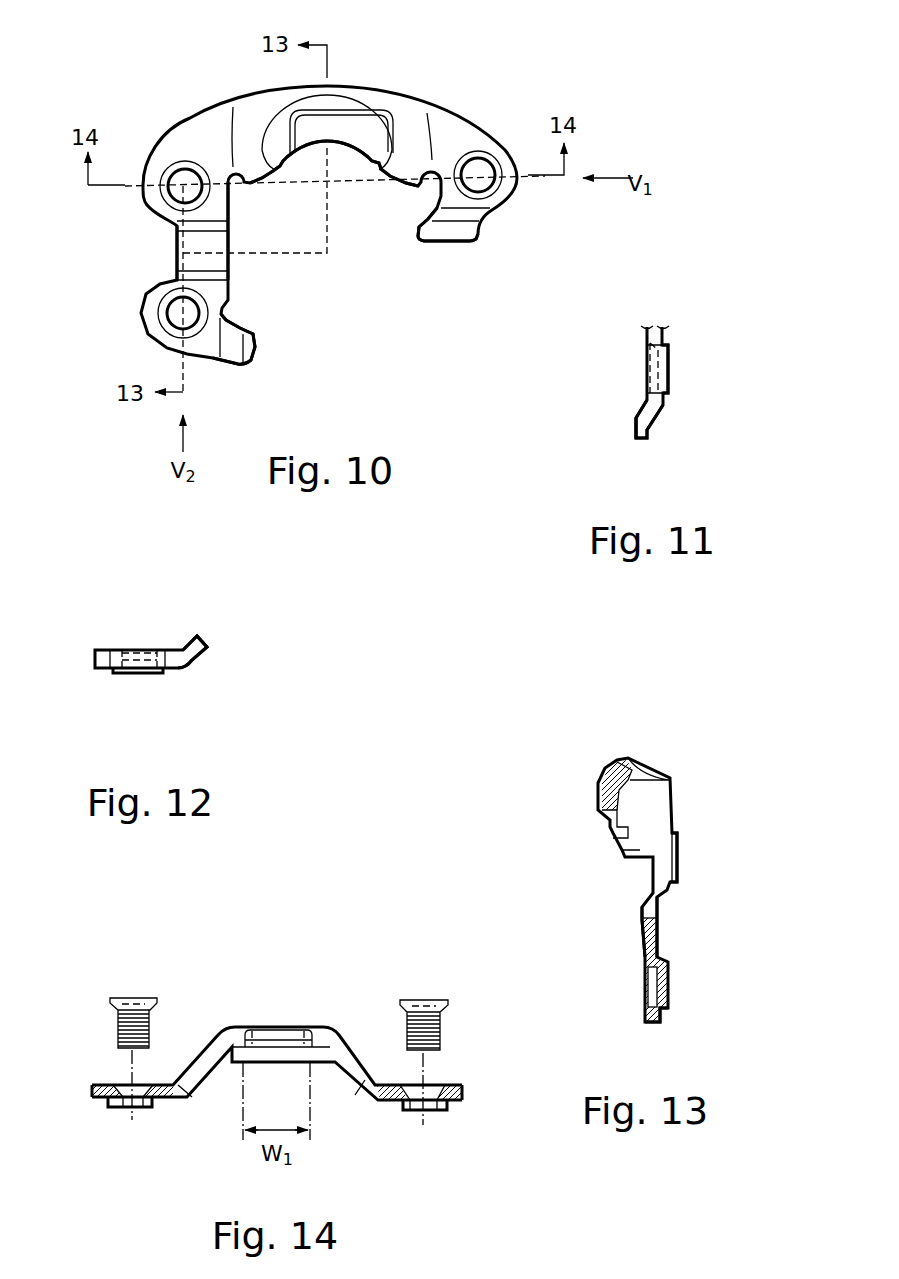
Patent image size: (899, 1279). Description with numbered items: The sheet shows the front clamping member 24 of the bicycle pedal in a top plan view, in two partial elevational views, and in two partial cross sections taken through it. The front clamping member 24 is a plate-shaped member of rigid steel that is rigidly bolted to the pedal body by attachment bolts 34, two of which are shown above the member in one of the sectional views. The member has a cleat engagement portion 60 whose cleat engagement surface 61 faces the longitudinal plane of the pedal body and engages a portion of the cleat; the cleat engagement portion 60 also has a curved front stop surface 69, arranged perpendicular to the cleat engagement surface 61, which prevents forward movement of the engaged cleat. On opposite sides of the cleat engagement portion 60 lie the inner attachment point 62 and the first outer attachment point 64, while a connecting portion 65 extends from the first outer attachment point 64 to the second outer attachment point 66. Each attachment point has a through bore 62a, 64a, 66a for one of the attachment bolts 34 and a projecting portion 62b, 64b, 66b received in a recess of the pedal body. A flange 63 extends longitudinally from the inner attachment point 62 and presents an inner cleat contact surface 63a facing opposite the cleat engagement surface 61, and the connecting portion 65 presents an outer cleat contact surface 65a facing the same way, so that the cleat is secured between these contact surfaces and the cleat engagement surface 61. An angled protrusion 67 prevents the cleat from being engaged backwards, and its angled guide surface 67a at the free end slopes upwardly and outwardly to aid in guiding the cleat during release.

In FIG. 10, the front clamping member 24 is at (412, 98).
In FIG. 11, the front clamping member 24 is at (697, 322).
In FIG. 12, the front clamping member 24 is at (122, 572).
In FIG. 13, the front clamping member 24 is at (700, 793).
In FIG. 14, the front clamping member 24 is at (327, 1023).
In FIG. 14, the attachment bolt 34 is at (149, 992).
In FIG. 10, the cleat engagement portion 60 is at (353, 90).
In FIG. 13, the cleat engagement portion 60 is at (603, 767).
In FIG. 14, the cleat engagement portion 60 is at (270, 1024).
In FIG. 13, the cleat engagement surface 61 is at (618, 800).
In FIG. 14, the cleat engagement surface 61 is at (266, 1048).
In FIG. 10, the inner attachment point 62 is at (492, 150).
In FIG. 11, the inner attachment point 62 is at (645, 373).
In FIG. 14, the inner attachment point 62 is at (445, 1082).
In FIG. 10, the through bore 62a is at (492, 188).
In FIG. 11, the through bore 62a is at (660, 387).
In FIG. 14, the through bore 62a is at (407, 1108).
In FIG. 11, the projecting portion 62b is at (669, 393).
In FIG. 14, the projecting portion 62b is at (448, 1111).
In FIG. 10, the flange 63 is at (432, 247).
In FIG. 11, the flange 63 is at (647, 441).
In FIG. 10, the inner cleat contact surface 63a is at (458, 228).
In FIG. 11, the inner cleat contact surface 63a is at (635, 428).
In FIG. 10, the first outer attachment point 64 is at (175, 158).
In FIG. 13, the first outer attachment point 64 is at (684, 860).
In FIG. 14, the first outer attachment point 64 is at (111, 1080).
In FIG. 10, the through bore 64a is at (170, 193).
In FIG. 14, the through bore 64a is at (148, 1098).
In FIG. 13, the projecting portion 64b is at (678, 881).
In FIG. 14, the projecting portion 64b is at (108, 1107).
In FIG. 10, the connecting portion 65 is at (232, 242).
In FIG. 13, the connecting portion 65 is at (658, 930).
In FIG. 10, the outer cleat contact surface 65a is at (215, 262).
In FIG. 13, the outer cleat contact surface 65a is at (645, 928).
In FIG. 10, the second outer attachment point 66 is at (150, 325).
In FIG. 12, the second outer attachment point 66 is at (147, 648).
In FIG. 13, the second outer attachment point 66 is at (672, 988).
In FIG. 10, the through bore 66a is at (167, 313).
In FIG. 12, the through bore 66a is at (120, 658).
In FIG. 13, the through bore 66a is at (659, 1005).
In FIG. 12, the projecting portion 66b is at (118, 673).
In FIG. 13, the projecting portion 66b is at (669, 1012).
In FIG. 10, the angled protrusion 67 is at (247, 327).
In FIG. 12, the angled protrusion 67 is at (187, 642).
In FIG. 10, the angled guide surface 67a is at (250, 350).
In FIG. 12, the angled guide surface 67a is at (207, 643).
In FIG. 10, the curved front stop surface 69 is at (332, 148).
In FIG. 13, the curved front stop surface 69 is at (608, 814).
In FIG. 14, the curved front stop surface 69 is at (281, 1037).